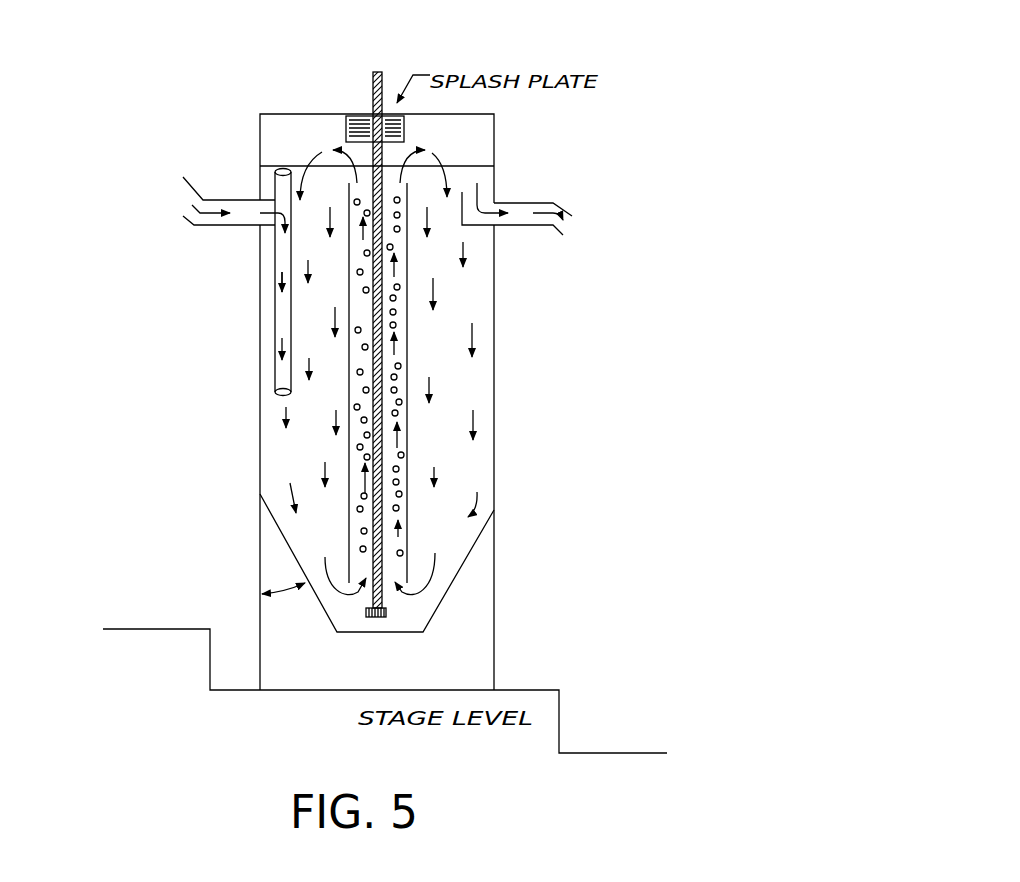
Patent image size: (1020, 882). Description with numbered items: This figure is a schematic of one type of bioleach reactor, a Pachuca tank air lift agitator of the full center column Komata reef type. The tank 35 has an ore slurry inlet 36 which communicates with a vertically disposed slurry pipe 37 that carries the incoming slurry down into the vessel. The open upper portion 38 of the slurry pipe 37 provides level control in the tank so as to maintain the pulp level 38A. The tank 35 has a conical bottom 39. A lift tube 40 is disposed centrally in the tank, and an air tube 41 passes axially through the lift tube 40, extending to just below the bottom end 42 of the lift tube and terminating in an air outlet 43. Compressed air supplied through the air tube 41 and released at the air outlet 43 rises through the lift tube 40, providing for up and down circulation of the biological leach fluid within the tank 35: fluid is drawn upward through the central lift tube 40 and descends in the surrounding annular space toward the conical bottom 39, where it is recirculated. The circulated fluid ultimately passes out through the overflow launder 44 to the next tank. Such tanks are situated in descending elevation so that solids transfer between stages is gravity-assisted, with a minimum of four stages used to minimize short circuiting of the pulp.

The tank 35 is at (260, 280).
The ore slurry inlet 36 is at (197, 227).
The slurry pipe 37 is at (273, 360).
The open upper portion of pipe 38 is at (278, 160).
The pulp level 38A is at (497, 166).
The conical bottom 39 is at (463, 571).
The lift tube 40 is at (408, 372).
The air tube 41 is at (373, 62).
The bottom end of the lift tube 42 is at (407, 563).
The air outlet 43 is at (392, 615).
The overflow launder 44 is at (658, 239).